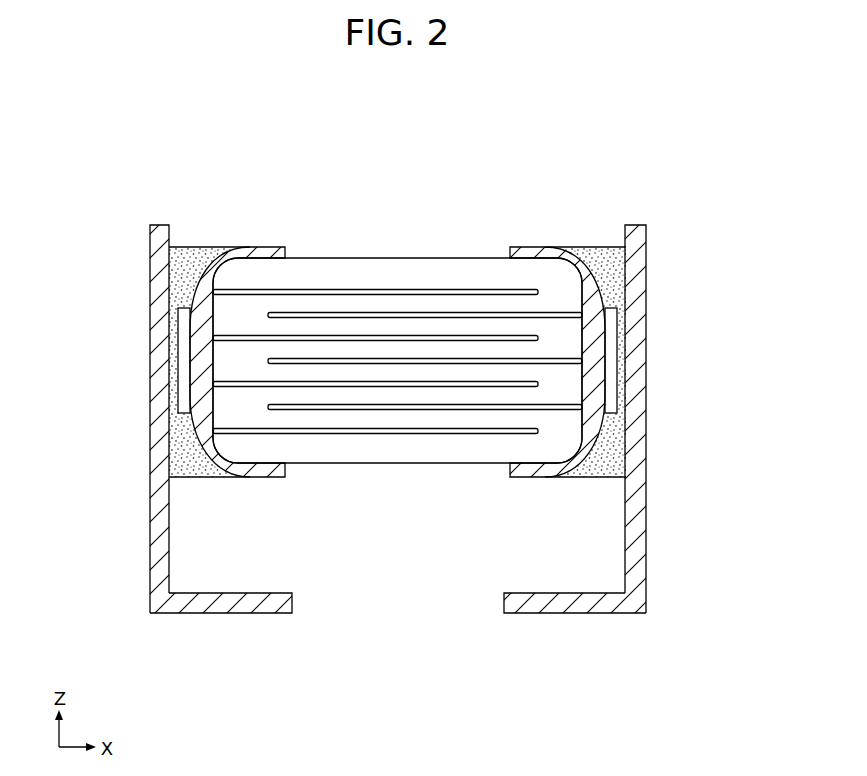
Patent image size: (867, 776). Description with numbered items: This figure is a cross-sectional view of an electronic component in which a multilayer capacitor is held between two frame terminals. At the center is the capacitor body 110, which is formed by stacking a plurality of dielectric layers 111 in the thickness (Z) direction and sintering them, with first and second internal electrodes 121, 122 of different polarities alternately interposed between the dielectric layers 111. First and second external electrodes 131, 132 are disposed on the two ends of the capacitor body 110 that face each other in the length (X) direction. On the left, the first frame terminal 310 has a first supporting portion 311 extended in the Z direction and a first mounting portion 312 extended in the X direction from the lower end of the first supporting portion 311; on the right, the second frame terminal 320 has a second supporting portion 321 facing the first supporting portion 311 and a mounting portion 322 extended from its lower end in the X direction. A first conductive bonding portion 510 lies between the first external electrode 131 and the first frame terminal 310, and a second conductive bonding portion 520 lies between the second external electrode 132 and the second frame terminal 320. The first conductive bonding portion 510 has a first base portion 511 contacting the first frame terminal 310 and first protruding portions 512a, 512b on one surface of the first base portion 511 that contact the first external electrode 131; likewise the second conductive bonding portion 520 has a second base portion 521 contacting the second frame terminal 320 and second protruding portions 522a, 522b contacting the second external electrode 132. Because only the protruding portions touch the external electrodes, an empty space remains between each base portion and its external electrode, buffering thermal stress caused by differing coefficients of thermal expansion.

The capacitor body 110 is at (404, 420).
The dielectric layer 111 is at (562, 340).
The first internal electrode 121 is at (465, 340).
The second internal electrode 122 is at (438, 372).
The first external electrode 131 is at (248, 252).
The second external electrode 132 is at (526, 252).
The first frame terminal 310 is at (161, 434).
The first supporting portion 311 is at (150, 556).
The first mounting portion 312 is at (195, 613).
The second frame terminal 320 is at (636, 434).
The second supporting portion 321 is at (646, 556).
The mounting portion 322 is at (600, 613).
The first conductive bonding portion 510 is at (132, 362).
The first base portion 511 is at (135, 360).
The first protruding portion 512a is at (175, 273).
The first protruding portion 512b is at (172, 442).
The second conductive bonding portion 520 is at (663, 362).
The second base portion 521 is at (732, 288).
The second protruding portion 522a is at (622, 273).
The second protruding portion 522b is at (623, 442).